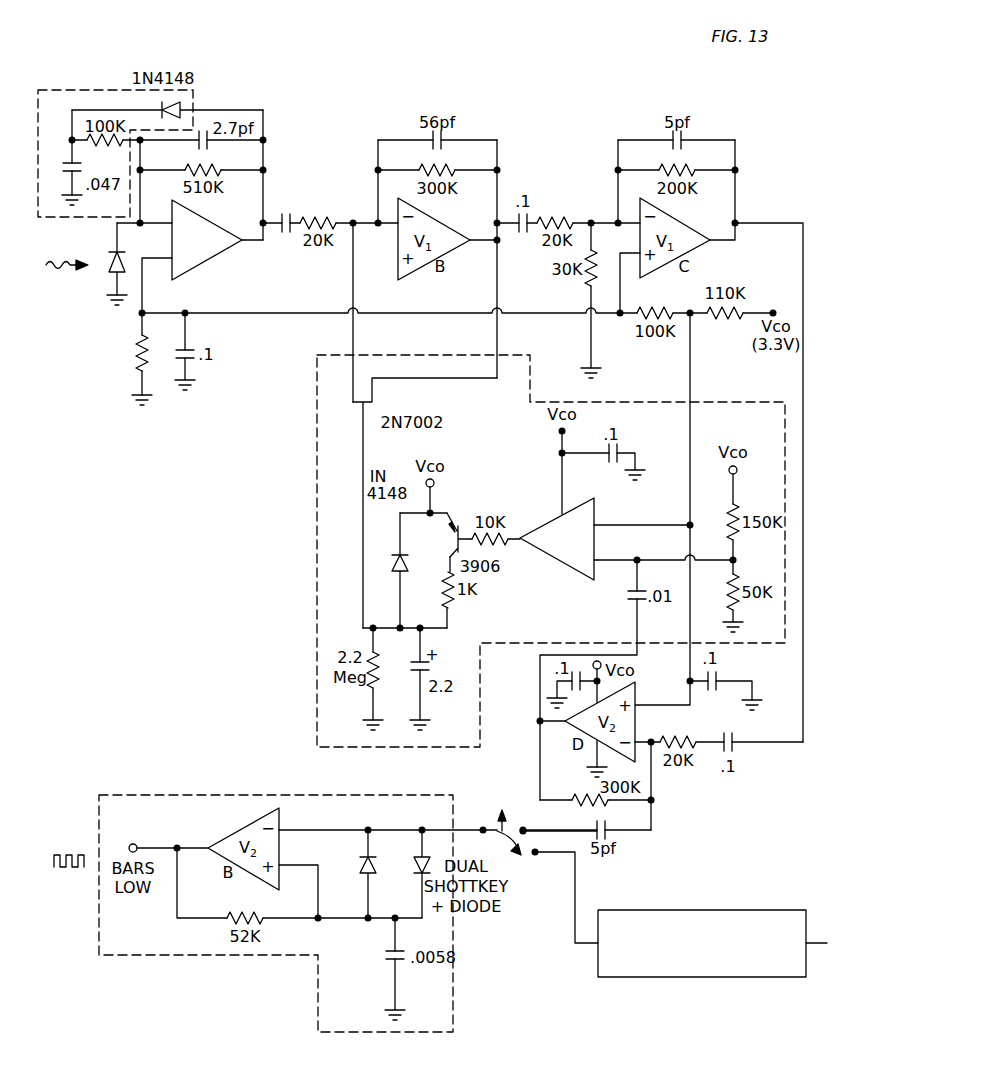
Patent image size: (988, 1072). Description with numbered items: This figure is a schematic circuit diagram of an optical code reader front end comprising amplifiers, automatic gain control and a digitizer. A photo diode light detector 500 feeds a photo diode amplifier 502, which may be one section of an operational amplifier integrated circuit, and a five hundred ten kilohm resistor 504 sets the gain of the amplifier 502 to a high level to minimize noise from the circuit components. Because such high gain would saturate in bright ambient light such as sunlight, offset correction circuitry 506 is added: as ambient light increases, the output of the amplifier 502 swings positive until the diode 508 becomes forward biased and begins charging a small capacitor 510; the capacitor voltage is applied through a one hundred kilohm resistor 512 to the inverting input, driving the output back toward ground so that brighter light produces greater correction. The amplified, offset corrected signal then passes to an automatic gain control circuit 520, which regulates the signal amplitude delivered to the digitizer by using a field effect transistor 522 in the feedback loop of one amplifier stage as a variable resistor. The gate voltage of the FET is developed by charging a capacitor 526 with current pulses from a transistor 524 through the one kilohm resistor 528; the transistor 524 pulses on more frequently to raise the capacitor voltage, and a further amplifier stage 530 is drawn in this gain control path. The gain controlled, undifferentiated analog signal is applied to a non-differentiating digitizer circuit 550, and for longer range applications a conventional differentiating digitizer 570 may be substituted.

The photo diode light detector 500 is at (112, 265).
The photo diode amplifier 502 is at (230, 247).
The 510 K resistor 504 is at (212, 167).
The offset correction circuitry 506 is at (70, 88).
The diode 508 is at (186, 109).
The 0.047 microfarad capacitor 510 is at (58, 165).
The 100 K ohm resistor 512 is at (106, 150).
The automatic gain control circuit 520 is at (316, 578).
The field effect transistor 522 is at (352, 404).
The transistor 524 is at (452, 525).
The capacitor 526 is at (432, 660).
The 1 K resistor 528 is at (442, 592).
The operational amplifier V2 A 530 is at (576, 581).
The non-differentiating digitizer circuit 550 is at (120, 795).
The differentiating digitizer 570 is at (762, 910).